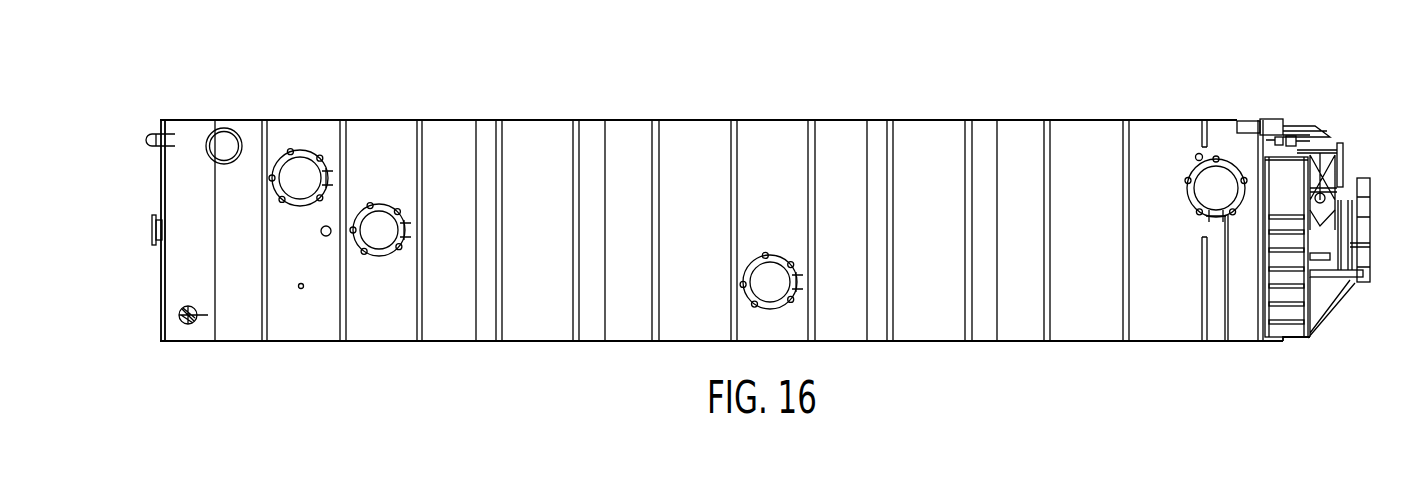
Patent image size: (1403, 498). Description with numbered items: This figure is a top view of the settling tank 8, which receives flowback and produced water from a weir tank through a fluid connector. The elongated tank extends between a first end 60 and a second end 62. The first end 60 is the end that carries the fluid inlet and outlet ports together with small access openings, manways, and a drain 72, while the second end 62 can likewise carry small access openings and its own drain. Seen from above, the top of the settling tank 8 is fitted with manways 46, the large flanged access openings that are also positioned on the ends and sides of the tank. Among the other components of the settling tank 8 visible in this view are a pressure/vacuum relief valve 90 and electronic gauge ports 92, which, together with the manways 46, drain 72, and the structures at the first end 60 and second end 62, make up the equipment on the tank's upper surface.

The settling tank 8 is at (274, 99).
The manway 46 is at (305, 177).
The first end 60 is at (1340, 165).
The second end 62 is at (160, 290).
The drain 72 is at (152, 231).
The pressure/vacuum relief valve 90 is at (222, 139).
The electronic gauge port 92 is at (1202, 153).